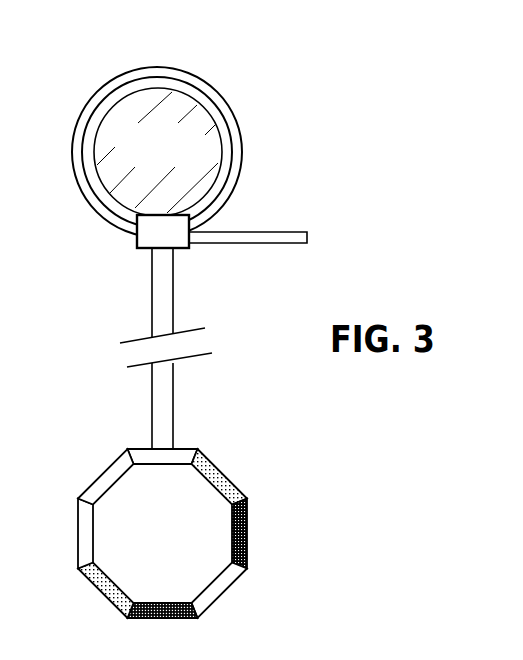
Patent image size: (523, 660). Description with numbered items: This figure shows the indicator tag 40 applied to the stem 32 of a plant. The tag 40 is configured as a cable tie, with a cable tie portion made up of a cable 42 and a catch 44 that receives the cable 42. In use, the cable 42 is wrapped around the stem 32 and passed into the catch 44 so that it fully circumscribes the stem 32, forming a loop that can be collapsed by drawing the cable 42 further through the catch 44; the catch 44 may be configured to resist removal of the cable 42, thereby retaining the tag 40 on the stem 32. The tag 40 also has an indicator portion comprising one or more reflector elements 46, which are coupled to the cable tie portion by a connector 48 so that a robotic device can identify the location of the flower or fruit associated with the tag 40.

The indicator tag 40 is at (115, 71).
The stem 32 is at (174, 158).
The catch 44 is at (175, 248).
The cable 42 is at (290, 243).
The connector 48 is at (153, 437).
The reflector elements 46 is at (205, 600).